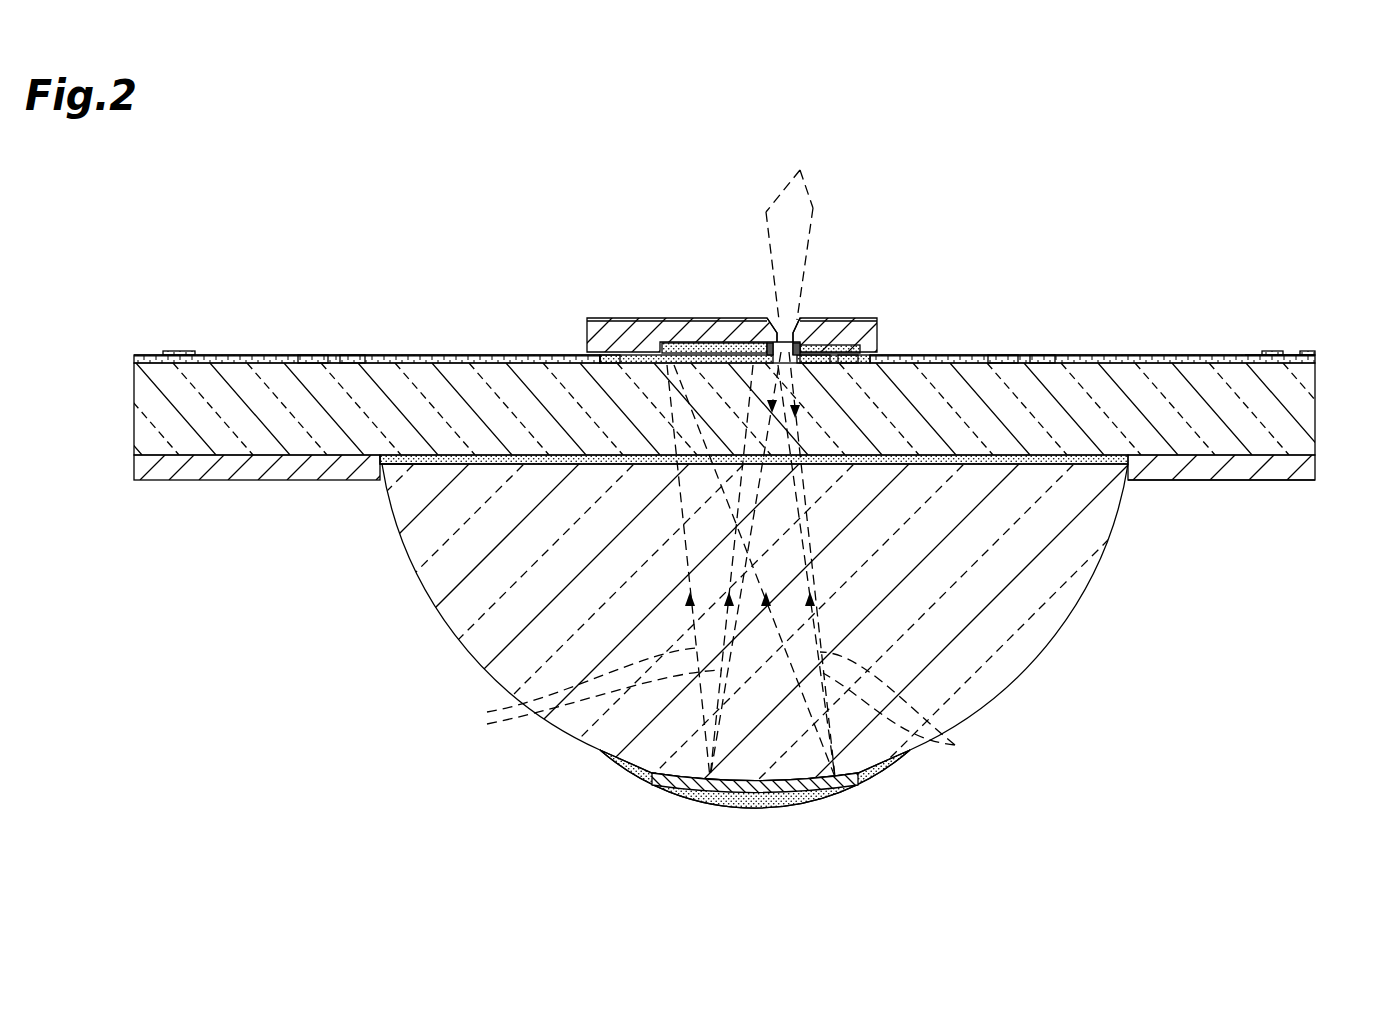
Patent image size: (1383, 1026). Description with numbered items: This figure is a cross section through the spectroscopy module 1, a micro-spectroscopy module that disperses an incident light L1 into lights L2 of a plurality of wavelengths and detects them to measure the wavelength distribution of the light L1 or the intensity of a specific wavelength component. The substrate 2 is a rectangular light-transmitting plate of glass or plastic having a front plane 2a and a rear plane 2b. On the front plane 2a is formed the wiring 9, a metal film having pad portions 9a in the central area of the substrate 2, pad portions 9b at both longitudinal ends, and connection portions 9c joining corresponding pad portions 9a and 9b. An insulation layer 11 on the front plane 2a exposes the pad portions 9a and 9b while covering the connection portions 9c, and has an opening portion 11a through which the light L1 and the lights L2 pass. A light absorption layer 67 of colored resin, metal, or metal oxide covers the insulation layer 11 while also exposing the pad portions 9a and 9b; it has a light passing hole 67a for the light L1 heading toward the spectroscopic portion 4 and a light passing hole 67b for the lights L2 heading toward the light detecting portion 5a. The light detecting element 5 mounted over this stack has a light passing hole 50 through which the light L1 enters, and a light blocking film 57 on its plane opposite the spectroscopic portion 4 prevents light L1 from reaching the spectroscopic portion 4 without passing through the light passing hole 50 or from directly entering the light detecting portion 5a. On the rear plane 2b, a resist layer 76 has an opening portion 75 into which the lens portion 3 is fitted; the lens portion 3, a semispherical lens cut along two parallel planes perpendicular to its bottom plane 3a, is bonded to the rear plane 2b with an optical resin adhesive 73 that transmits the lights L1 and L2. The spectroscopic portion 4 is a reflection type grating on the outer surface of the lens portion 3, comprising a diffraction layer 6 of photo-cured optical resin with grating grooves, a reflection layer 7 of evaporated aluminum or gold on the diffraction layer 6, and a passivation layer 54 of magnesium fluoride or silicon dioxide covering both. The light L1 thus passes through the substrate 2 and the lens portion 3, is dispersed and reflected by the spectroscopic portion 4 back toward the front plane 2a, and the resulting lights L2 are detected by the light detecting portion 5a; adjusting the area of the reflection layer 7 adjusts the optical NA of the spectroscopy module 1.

The spectroscopy module 1 is at (1156, 214).
The substrate 2 is at (1302, 412).
The front plane 2a is at (1298, 357).
The rear plane 2b is at (1278, 462).
The lens portion 3 is at (1080, 603).
The bottom plane 3a is at (1068, 454).
The spectroscopic portion 4 is at (755, 811).
The light detecting element 5 is at (645, 309).
The light detecting portion 5a is at (697, 345).
The diffraction layer 6 is at (803, 800).
The reflection layer 7 is at (765, 800).
The wiring 9 is at (432, 350).
The pad portions 9a is at (609, 355).
The pad portions 9b is at (195, 352).
The connection portions 9c is at (393, 355).
The insulation layer 11 is at (351, 357).
The opening portion 11a is at (808, 352).
The light passing hole 50 is at (772, 330).
The passivation layer 54 is at (717, 800).
The light blocking film 57 is at (727, 320).
The light absorption layer 67 is at (311, 356).
The light passing hole 67a is at (795, 367).
The light passing hole 67b is at (660, 368).
The optical resin adhesive 73 is at (430, 462).
The opening portion 75 is at (1127, 464).
The resist layer 76 is at (1302, 462).
The light L1 is at (772, 458).
The lights L2 is at (497, 714).